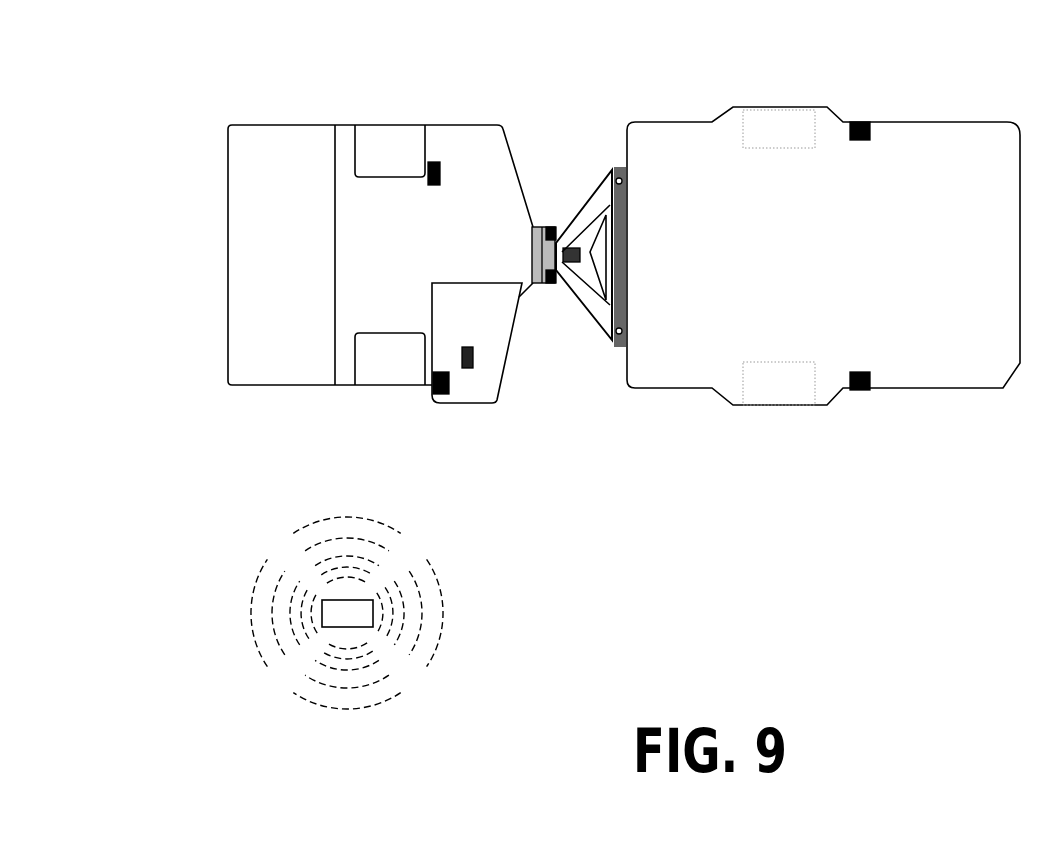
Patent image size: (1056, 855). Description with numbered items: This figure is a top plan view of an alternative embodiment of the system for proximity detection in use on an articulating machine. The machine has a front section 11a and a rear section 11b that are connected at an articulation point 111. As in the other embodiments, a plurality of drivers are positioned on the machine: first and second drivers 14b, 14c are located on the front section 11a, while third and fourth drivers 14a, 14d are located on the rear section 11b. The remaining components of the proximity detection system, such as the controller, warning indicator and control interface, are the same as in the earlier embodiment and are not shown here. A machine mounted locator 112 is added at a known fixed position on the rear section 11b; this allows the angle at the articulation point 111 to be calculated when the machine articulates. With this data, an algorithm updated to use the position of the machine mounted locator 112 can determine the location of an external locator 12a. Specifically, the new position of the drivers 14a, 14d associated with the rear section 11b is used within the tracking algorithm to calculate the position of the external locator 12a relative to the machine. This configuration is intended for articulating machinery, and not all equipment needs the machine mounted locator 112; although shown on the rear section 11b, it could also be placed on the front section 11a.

The front section 11a is at (715, 152).
The rear section 11b is at (240, 250).
The third driver 14a is at (436, 392).
The first driver 14b is at (873, 390).
The second driver 14c is at (866, 126).
The fourth driver 14d is at (430, 163).
The articulation point 111 is at (551, 226).
The machine mounted locator 112 is at (480, 364).
The external locator 12a is at (367, 600).